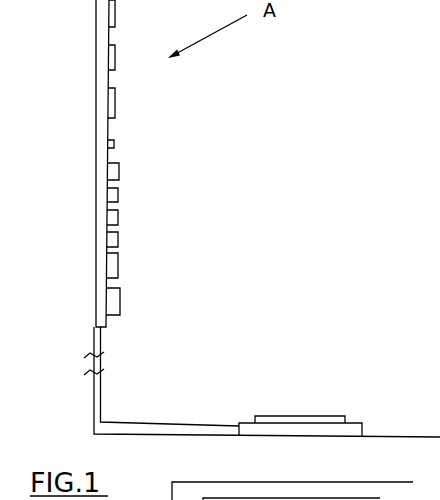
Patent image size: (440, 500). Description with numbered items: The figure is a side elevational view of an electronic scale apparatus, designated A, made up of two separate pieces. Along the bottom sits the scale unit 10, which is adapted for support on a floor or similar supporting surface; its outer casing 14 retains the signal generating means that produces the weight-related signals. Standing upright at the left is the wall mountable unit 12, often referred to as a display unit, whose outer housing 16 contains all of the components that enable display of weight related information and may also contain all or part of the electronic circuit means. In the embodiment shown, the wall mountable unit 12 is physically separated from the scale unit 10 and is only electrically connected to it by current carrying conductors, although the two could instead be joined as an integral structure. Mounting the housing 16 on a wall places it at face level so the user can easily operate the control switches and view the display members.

The scale unit 10 is at (316, 386).
The wall mountable unit 12 is at (88, 188).
The outer casing 14 is at (289, 428).
The outer housing 16 is at (96, 63).